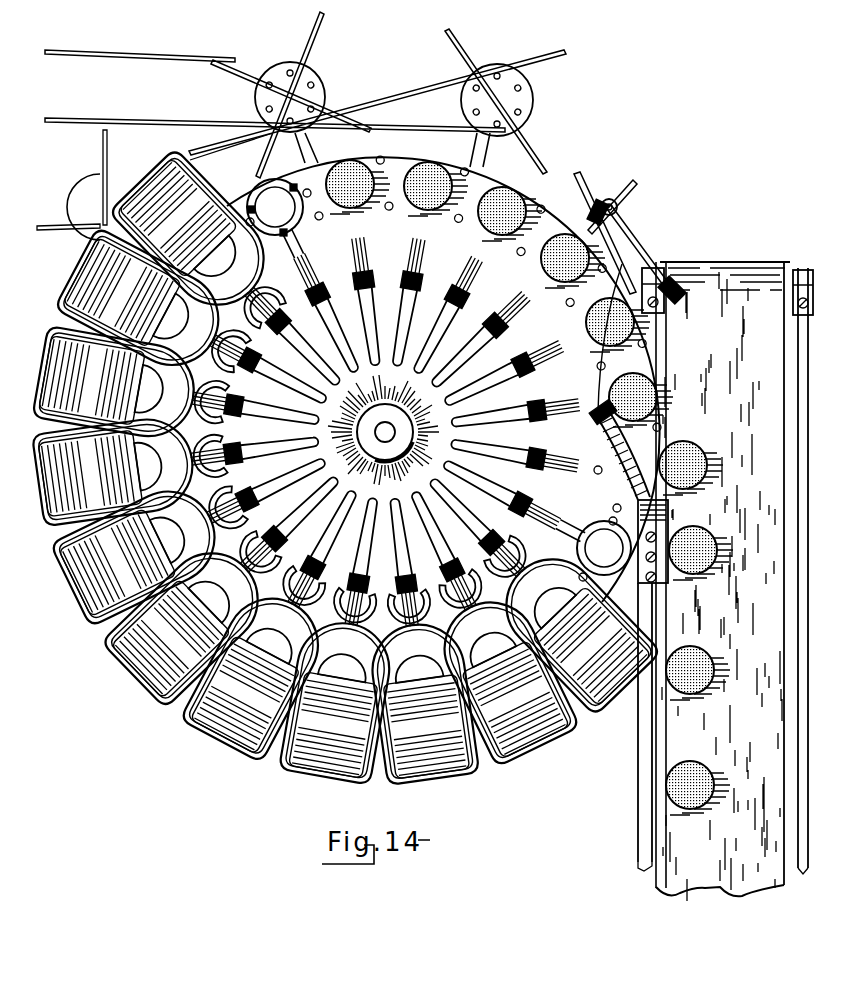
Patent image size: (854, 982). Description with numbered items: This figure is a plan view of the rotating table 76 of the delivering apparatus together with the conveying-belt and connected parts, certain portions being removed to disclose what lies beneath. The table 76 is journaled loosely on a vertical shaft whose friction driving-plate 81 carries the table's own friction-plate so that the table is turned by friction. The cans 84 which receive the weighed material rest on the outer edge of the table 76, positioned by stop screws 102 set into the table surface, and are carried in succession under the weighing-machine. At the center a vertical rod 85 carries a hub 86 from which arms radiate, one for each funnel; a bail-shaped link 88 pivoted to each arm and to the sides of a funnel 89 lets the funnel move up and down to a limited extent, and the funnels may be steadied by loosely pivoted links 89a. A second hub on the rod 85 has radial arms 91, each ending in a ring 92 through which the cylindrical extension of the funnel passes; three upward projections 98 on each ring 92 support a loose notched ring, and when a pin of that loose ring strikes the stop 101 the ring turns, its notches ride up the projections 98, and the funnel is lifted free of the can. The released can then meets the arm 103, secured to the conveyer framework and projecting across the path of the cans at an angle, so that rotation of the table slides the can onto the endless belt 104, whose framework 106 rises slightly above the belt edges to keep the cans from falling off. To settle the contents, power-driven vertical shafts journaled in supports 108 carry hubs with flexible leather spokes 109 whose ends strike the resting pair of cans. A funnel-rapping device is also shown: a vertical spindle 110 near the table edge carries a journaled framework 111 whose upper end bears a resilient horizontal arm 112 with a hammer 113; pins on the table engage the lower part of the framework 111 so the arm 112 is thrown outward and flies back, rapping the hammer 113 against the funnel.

The horizontally-rotating table 76 is at (443, 379).
The friction driving-plate 81 is at (307, 353).
The cans 84 is at (354, 160).
The vertical rod 85 is at (385, 432).
The hub 86 is at (397, 443).
The bail-shaped link 88 is at (267, 276).
The funnel 89 is at (222, 741).
The links 89a is at (103, 624).
The radial arms 91 is at (370, 254).
The ring 92 is at (253, 218).
The upward projections 98 is at (290, 189).
The stop 101 is at (620, 268).
The screws 102 is at (613, 507).
The arm 103 is at (603, 435).
The endless belt 104 is at (100, 163).
The framework 106 is at (640, 775).
The support 108 is at (486, 156).
The flexible spokes 109 is at (324, 97).
The vertical spindle 110 is at (624, 208).
The vertical framework 111 is at (620, 176).
The resilient horizontal arm 112 is at (636, 245).
The hammer 113 is at (683, 294).